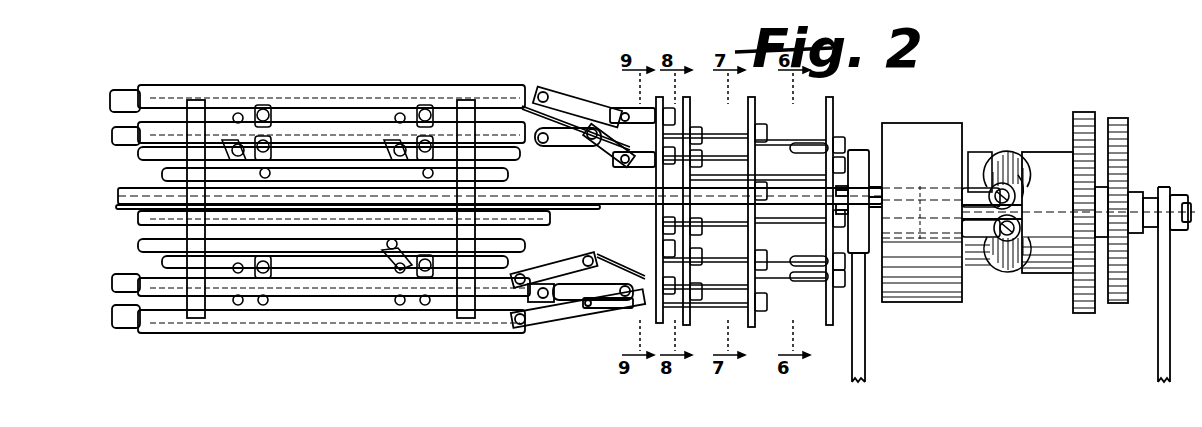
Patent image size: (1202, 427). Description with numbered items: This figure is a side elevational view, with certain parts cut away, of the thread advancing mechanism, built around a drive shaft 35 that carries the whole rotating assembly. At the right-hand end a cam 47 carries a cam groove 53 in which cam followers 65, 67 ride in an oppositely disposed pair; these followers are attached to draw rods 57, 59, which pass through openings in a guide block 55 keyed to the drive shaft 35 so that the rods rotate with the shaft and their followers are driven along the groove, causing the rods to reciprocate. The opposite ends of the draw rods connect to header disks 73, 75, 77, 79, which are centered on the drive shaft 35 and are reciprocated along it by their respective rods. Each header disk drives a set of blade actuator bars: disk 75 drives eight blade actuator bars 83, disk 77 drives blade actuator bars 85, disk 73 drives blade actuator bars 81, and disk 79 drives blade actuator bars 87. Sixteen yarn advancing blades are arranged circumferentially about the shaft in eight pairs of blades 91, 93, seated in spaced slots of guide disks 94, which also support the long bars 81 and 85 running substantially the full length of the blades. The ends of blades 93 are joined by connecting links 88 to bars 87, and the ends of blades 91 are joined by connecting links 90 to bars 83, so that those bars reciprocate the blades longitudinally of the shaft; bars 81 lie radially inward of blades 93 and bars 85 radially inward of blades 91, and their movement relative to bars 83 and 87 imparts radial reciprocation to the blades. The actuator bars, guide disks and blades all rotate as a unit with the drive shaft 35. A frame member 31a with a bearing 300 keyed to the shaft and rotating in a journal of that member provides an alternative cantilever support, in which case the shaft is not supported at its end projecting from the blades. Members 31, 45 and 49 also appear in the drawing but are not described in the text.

The shaft support stem 31 is at (1160, 351).
The frame member 31a is at (866, 353).
The drive shaft 35 is at (122, 194).
The gear 45 is at (1122, 141).
The cam 47 is at (1062, 262).
The gear 49 is at (1087, 125).
The cam groove 53 is at (1007, 153).
The guide block 55 is at (920, 301).
The draw rod 57 is at (966, 248).
The draw rod 59 is at (969, 187).
The cam follower 65 is at (1026, 262).
The cam follower 67 is at (1018, 180).
The header disk 73 is at (826, 308).
The header disk 75 is at (755, 321).
The header disk 77 is at (690, 320).
The header disk 79 is at (656, 318).
The blade actuator bar 81 is at (790, 168).
The blade actuator bar 83 is at (704, 190).
The blade actuator bar 85 is at (606, 248).
The blade actuator bar 87 is at (636, 109).
The connecting link 88 is at (573, 101).
The connecting link 90 is at (555, 110).
The yarn advancing blade 91 is at (114, 136).
The yarn advancing blade 93 is at (190, 84).
The guide disk 94 is at (200, 320).
The bearing 300 is at (872, 151).